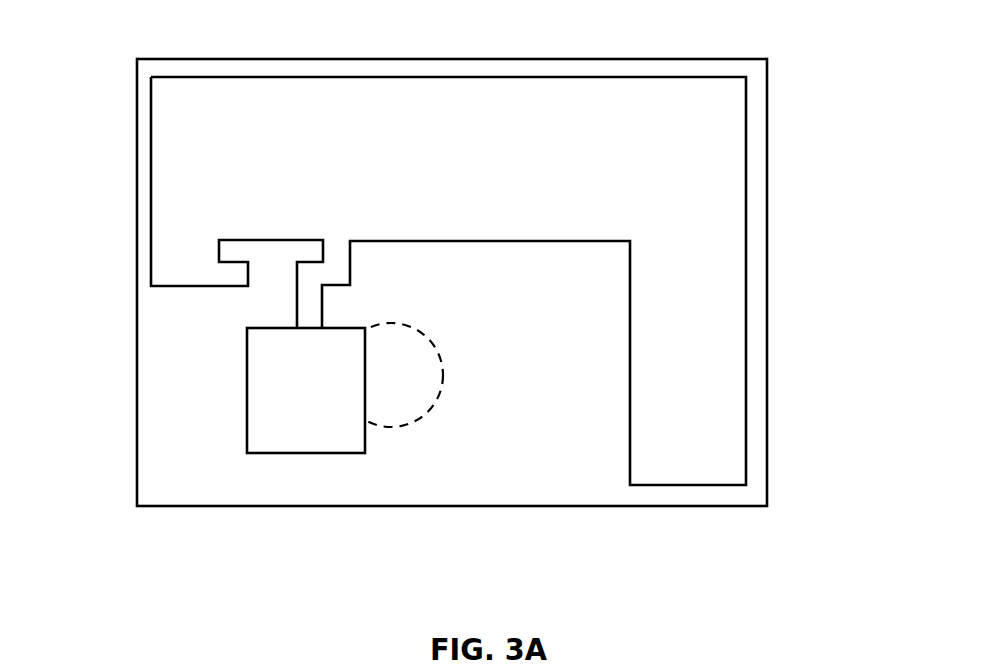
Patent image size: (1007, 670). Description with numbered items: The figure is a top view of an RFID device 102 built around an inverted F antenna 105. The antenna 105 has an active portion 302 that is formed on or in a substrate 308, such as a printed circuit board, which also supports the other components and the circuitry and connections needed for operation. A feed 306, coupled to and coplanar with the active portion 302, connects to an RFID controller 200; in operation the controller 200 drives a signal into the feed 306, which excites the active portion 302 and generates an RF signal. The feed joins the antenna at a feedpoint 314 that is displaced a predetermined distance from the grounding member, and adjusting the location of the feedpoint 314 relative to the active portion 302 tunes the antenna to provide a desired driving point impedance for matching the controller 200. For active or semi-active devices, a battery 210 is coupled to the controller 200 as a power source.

The RFID device 102 is at (100, 131).
The inverted F antenna 105 is at (547, 95).
The active portion 302 is at (708, 142).
The substrate 308 is at (767, 221).
The feedpoint 314 is at (364, 249).
The feed 306 is at (356, 282).
The RFID controller 200 is at (299, 453).
The battery 210 is at (410, 427).